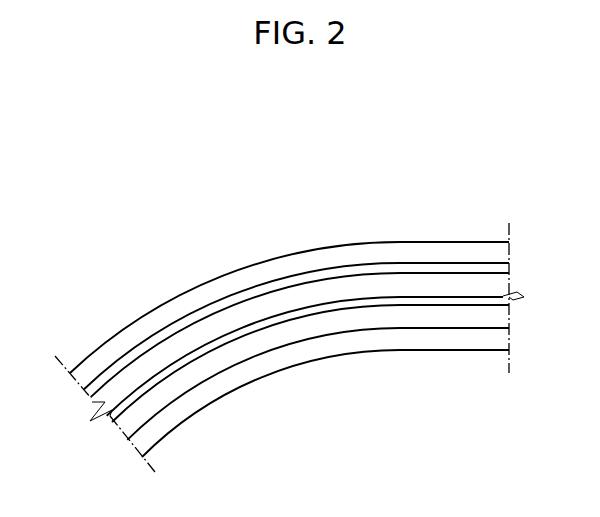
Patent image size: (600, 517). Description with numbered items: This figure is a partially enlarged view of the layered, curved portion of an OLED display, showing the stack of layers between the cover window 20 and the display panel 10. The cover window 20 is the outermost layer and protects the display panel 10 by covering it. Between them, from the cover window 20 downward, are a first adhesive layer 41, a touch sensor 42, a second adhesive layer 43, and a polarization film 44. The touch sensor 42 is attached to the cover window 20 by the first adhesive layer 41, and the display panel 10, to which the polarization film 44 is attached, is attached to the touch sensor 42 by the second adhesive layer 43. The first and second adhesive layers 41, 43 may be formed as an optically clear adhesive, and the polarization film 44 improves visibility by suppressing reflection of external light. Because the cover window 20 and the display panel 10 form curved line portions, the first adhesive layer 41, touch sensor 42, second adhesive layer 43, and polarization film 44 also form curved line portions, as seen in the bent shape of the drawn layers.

The cover window 20 is at (298, 252).
The first adhesive layer 41 is at (470, 266).
The touch sensor 42 is at (92, 408).
The second adhesive layer 43 is at (477, 303).
The polarization film 44 is at (125, 428).
The display panel 10 is at (297, 353).